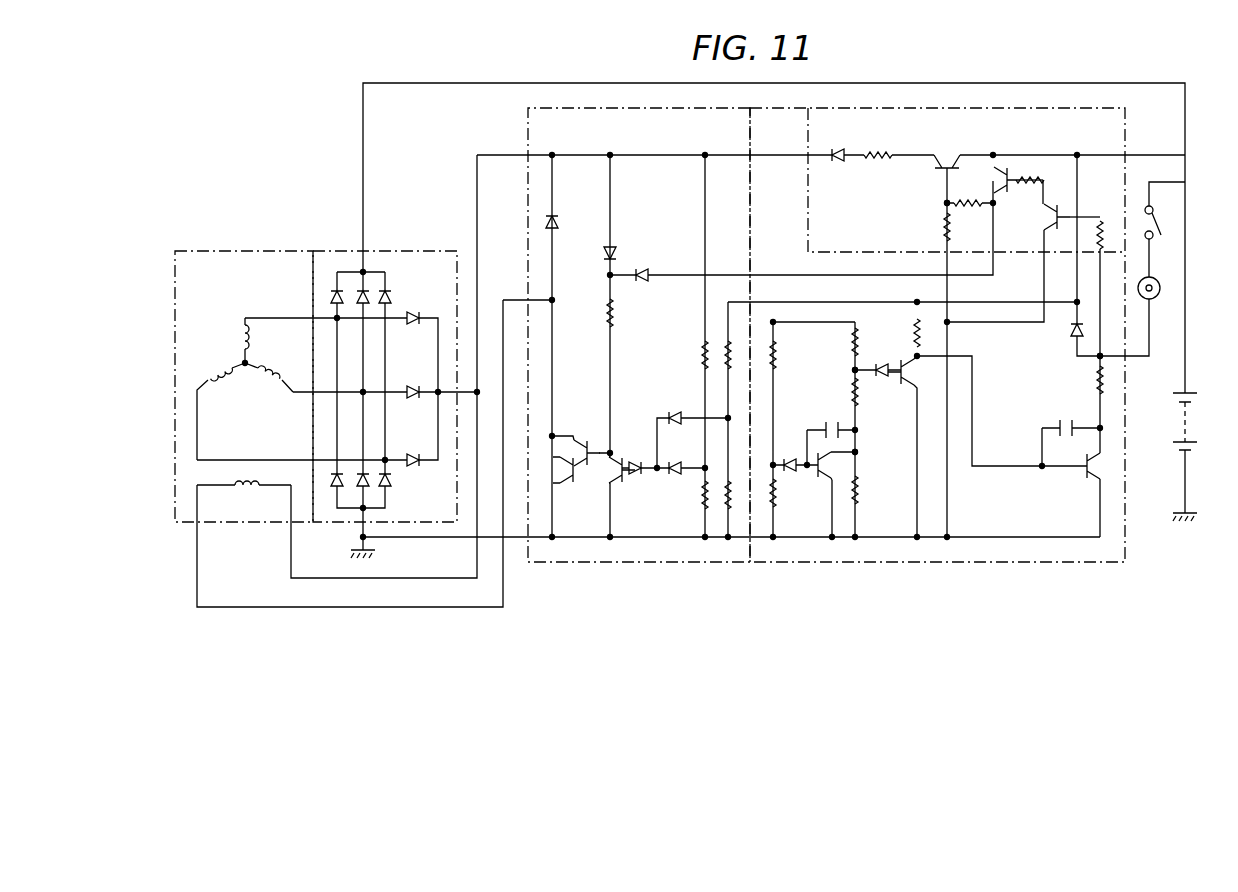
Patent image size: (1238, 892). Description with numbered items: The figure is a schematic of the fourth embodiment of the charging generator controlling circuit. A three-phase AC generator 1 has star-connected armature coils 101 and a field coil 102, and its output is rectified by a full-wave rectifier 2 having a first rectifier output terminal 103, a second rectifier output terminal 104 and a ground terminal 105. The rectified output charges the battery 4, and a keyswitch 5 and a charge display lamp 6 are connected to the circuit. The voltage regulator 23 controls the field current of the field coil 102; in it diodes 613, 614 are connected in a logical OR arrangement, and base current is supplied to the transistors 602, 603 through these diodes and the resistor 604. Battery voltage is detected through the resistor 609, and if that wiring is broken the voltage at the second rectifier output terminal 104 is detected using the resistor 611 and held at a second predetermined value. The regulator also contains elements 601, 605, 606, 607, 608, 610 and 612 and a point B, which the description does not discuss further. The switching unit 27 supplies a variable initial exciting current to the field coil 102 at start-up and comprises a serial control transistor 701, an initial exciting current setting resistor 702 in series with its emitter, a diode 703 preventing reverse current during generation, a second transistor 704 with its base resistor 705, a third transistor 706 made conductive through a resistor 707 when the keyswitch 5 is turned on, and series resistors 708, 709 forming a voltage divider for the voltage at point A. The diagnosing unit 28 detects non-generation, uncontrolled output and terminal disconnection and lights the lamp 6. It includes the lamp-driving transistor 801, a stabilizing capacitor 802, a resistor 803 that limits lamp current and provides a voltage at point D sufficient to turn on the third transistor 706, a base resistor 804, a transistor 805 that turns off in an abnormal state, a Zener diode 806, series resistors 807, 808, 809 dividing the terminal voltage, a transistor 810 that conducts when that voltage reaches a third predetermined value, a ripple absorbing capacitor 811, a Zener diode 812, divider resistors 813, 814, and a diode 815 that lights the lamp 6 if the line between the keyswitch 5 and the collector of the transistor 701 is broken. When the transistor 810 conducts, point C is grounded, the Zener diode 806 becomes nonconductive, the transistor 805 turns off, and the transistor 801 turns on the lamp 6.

The three-phase AC generator 1 is at (245, 251).
The full-wave rectifier 2 is at (378, 251).
The battery 4 is at (1176, 423).
The keyswitch 5 is at (1161, 226).
The charge display lamp 6 is at (1156, 282).
The voltage regulator 23 is at (577, 562).
The switching unit 27 is at (1080, 108).
The diagnosing unit 28 is at (1042, 562).
The armature coil 101 is at (240, 362).
The field coil 102 is at (238, 490).
The first rectifier output terminal 103 is at (392, 286).
The second rectifier output terminal 104 is at (435, 378).
The ground terminal 105 is at (388, 494).
The diode 601 is at (560, 224).
The transistor 602 is at (552, 470).
The transistor 603 is at (589, 428).
The resistor 604 is at (604, 312).
The transistor 605 is at (608, 482).
The diode 606 is at (633, 462).
The diode 607 is at (672, 410).
The diode 608 is at (673, 482).
The resistor 609 is at (722, 348).
The resistor 610 is at (723, 520).
The resistor 611 is at (700, 355).
The resistor 612 is at (700, 505).
The diode 613 is at (620, 248).
The diode 614 is at (642, 270).
The serial control transistor 701 is at (946, 162).
The initial exciting current setting resistor 702 is at (878, 150).
The diode 703 is at (838, 150).
The second transistor 704 is at (1003, 176).
The resistor 705 is at (1025, 172).
The third transistor 706 is at (1050, 222).
The resistor 707 is at (1102, 230).
The resistor 708 is at (968, 212).
The resistor 709 is at (940, 228).
The transistor 801 is at (1100, 468).
The capacitor 802 is at (1065, 420).
The resistor 803 is at (1095, 382).
The resistor 804 is at (910, 333).
The transistor 805 is at (915, 374).
The Zener diode 806 is at (885, 380).
The first resistor 807 is at (850, 345).
The second resistor 808 is at (850, 389).
The third resistor 809 is at (858, 500).
The transistor 810 is at (848, 466).
The ripple absorbing capacitor 811 is at (850, 441).
The Zener diode 812 is at (790, 472).
The resistor 813 is at (780, 352).
The resistor 814 is at (778, 502).
The diode 815 is at (1067, 334).
The point A is at (944, 203).
The node B is at (848, 371).
The point C is at (858, 455).
The point D is at (1101, 356).